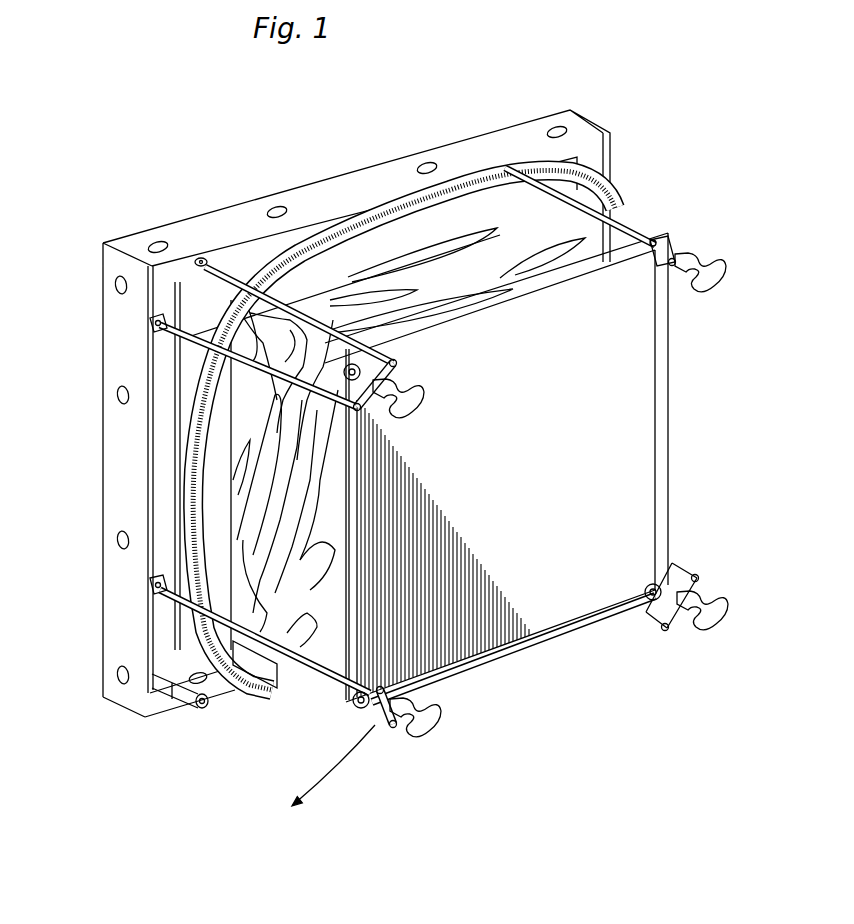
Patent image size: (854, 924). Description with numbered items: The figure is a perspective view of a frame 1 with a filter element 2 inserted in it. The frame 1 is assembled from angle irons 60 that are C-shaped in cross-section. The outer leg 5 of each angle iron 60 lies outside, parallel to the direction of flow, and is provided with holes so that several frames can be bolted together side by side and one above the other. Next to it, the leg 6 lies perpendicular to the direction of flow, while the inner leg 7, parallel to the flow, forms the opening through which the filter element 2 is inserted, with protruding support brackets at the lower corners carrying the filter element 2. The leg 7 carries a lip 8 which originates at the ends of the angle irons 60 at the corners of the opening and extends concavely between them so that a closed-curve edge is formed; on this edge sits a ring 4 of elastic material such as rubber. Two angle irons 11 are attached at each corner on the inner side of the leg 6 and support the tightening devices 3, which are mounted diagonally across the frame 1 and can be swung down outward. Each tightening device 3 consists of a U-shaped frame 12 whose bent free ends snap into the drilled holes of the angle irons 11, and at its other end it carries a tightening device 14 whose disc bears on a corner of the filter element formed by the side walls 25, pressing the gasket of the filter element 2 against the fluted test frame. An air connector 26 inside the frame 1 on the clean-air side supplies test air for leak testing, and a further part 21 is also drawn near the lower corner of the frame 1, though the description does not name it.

The frame 1 is at (343, 158).
The filter element 2 is at (632, 407).
The tightening device 3 is at (636, 211).
The ring 4 is at (183, 460).
The leg 5 is at (476, 148).
The leg 6 is at (165, 407).
The inner leg 7 is at (187, 628).
The lip 8 is at (217, 502).
The angle irons 11 is at (203, 259).
The U-shaped frame 12 is at (653, 237).
The tightening device 14 is at (721, 250).
The connector block 21 is at (258, 675).
The side walls 25 is at (570, 627).
The air connector 26 is at (185, 693).
The angle irons 60 is at (172, 217).